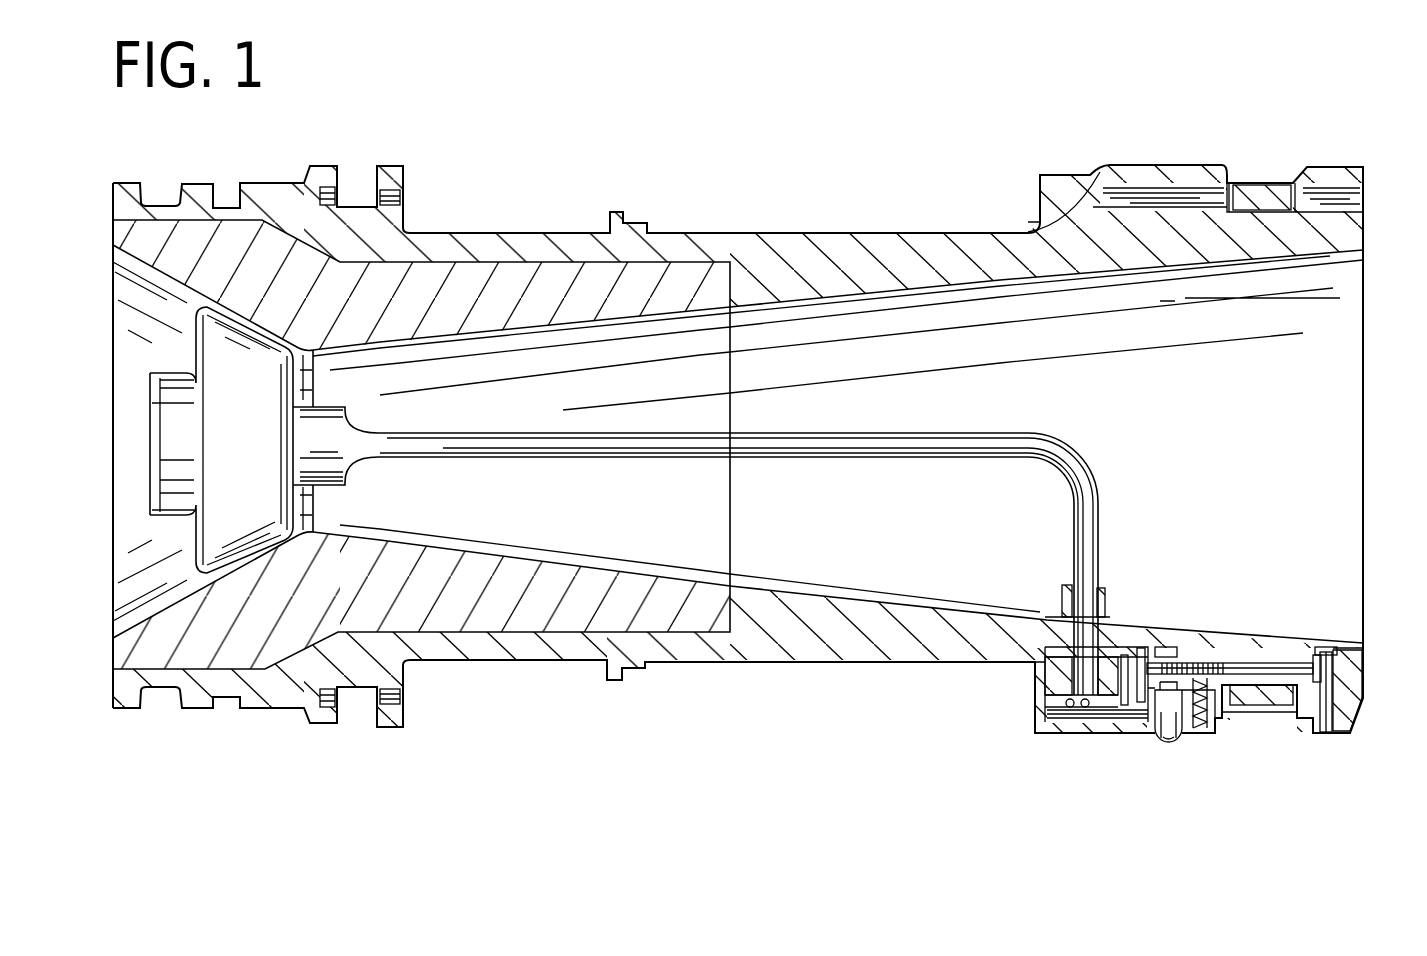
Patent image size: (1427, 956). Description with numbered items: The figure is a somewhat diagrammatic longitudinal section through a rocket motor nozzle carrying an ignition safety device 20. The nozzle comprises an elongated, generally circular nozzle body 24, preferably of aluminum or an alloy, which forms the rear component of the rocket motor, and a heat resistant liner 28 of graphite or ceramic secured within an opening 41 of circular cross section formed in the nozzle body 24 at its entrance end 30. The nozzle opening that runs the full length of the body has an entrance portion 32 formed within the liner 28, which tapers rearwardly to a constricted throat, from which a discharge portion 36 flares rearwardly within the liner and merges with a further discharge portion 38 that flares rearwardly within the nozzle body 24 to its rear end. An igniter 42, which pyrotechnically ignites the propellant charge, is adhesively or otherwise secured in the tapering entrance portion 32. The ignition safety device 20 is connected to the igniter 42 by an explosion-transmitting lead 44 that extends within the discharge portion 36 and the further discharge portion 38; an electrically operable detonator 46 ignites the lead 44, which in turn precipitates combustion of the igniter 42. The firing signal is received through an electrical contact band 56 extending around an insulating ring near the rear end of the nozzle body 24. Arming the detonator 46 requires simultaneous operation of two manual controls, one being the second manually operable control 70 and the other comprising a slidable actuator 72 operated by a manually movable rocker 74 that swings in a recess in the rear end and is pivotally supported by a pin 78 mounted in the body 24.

The ignition safety device 20 is at (1091, 793).
The nozzle body 24 is at (860, 664).
The heat resistant liner 28 is at (113, 656).
The entrance end 30 is at (113, 199).
The entrance portion 32 is at (147, 258).
The discharge portion 36 is at (580, 572).
The further discharge portion 38 is at (810, 594).
The opening 41 is at (461, 616).
The igniter 42 is at (188, 554).
The explosion-transmitting lead 44 is at (781, 449).
The detonator 46 is at (1080, 678).
The electrical contact band 56 is at (1259, 714).
The second manually operable control 70 is at (1171, 752).
The slidable actuator 72 is at (1254, 660).
The rocker 74 is at (1364, 676).
The pin 78 is at (1327, 712).